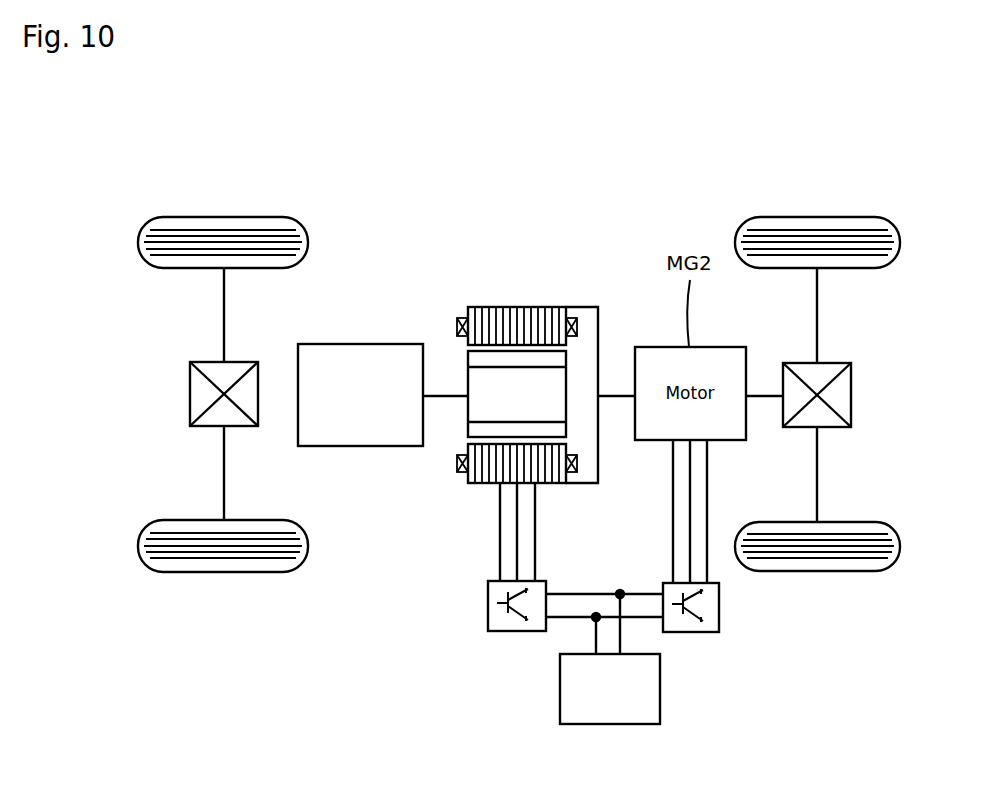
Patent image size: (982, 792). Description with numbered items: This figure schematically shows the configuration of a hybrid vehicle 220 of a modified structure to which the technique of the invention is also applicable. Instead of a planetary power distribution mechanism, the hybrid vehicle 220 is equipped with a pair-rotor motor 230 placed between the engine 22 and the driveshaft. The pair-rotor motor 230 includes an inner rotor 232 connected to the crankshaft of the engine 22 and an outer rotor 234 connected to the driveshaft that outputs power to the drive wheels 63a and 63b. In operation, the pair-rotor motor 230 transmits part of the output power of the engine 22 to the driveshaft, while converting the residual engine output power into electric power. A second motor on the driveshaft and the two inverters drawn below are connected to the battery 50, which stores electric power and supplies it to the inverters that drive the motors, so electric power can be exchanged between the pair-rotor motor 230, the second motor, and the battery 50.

The engine 22 is at (360, 446).
The battery 50 is at (660, 685).
The drive wheel 63a is at (817, 217).
The drive wheel 63b is at (817, 571).
The hybrid vehicle 220 is at (628, 222).
The pair-rotor motor 230 is at (502, 336).
The inner rotor 232 is at (468, 377).
The outer rotor 234 is at (455, 232).